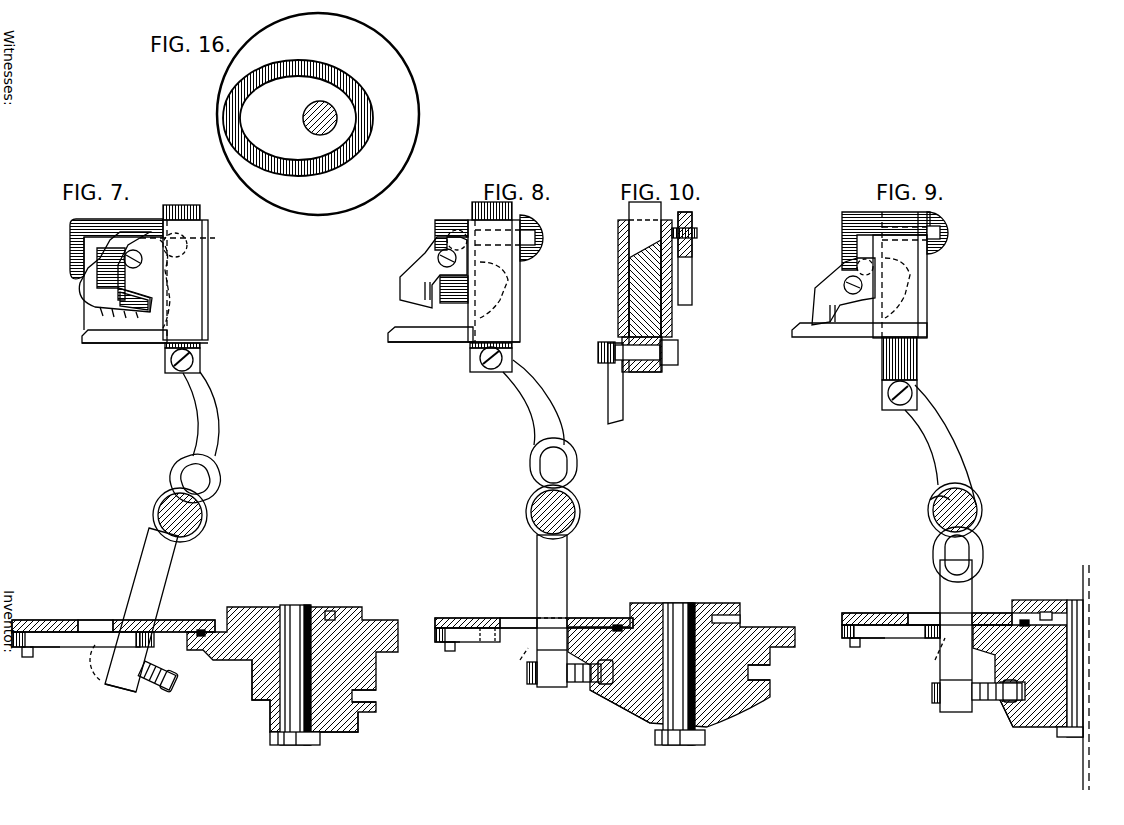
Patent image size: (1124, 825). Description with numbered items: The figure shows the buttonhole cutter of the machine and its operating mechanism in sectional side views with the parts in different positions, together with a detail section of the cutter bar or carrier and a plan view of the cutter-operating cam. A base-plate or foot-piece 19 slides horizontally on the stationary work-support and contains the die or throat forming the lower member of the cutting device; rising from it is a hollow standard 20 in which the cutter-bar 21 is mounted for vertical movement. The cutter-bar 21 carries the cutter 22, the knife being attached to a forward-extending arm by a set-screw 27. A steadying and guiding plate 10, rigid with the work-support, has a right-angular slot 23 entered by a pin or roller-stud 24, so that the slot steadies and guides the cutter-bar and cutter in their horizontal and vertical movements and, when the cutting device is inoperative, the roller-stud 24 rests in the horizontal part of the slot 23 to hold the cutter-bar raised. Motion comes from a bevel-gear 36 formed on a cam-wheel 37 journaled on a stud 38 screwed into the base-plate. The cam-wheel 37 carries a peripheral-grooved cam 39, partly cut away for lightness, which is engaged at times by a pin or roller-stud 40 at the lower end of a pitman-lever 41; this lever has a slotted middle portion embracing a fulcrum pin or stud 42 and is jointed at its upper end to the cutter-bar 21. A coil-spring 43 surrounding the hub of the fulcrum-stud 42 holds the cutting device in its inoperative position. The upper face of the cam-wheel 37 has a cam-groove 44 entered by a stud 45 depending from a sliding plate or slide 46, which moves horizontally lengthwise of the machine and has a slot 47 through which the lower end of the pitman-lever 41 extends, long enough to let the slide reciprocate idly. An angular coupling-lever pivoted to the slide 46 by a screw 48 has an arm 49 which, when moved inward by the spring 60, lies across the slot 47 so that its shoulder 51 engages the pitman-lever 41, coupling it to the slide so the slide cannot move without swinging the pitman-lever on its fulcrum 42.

In FIG. 7, the steadying and guiding plate 10 is at (70, 246).
In FIG. 8, the steadying and guiding plate 10 is at (440, 220).
In FIG. 10, the steadying and guiding plate 10 is at (692, 290).
In FIG. 9, the steadying and guiding plate 10 is at (845, 235).
In FIG. 7, the base-plate or foot-piece 19 is at (82, 336).
In FIG. 8, the base-plate or foot-piece 19 is at (388, 336).
In FIG. 9, the base-plate or foot-piece 19 is at (792, 331).
In FIG. 7, the hollow standard 20 is at (192, 270).
In FIG. 8, the hollow standard 20 is at (505, 272).
In FIG. 10, the hollow standard 20 is at (618, 285).
In FIG. 9, the hollow standard 20 is at (905, 268).
In FIG. 7, the cutter-bar 21 is at (182, 205).
In FIG. 8, the cutter-bar 21 is at (512, 210).
In FIG. 10, the cutter-bar 21 is at (661, 205).
In FIG. 9, the cutter-bar 21 is at (912, 358).
In FIG. 7, the cutter 22 is at (80, 286).
In FIG. 8, the cutter 22 is at (410, 285).
In FIG. 9, the cutter 22 is at (815, 290).
In FIG. 7, the right-angular slot 23 is at (97, 268).
In FIG. 8, the right-angular slot 23 is at (540, 256).
In FIG. 9, the right-angular slot 23 is at (945, 248).
In FIG. 7, the pin or roller-stud 24 is at (205, 238).
In FIG. 8, the pin or roller-stud 24 is at (446, 240).
In FIG. 10, the pin or roller-stud 24 is at (697, 233).
In FIG. 9, the pin or roller-stud 24 is at (840, 264).
In FIG. 7, the set-screw 27 is at (140, 266).
In FIG. 8, the set-screw 27 is at (438, 258).
In FIG. 9, the set-screw 27 is at (860, 290).
In FIG. 16, the bevel-gear 36 is at (318, 114).
In FIG. 7, the bevel-gear 36 is at (203, 658).
In FIG. 8, the bevel-gear 36 is at (790, 655).
In FIG. 9, the bevel-gear 36 is at (1020, 676).
In FIG. 7, the cam-wheel 37 is at (262, 706).
In FIG. 8, the cam-wheel 37 is at (640, 712).
In FIG. 9, the cam-wheel 37 is at (1008, 725).
In FIG. 16, the stud 38 is at (305, 115).
In FIG. 7, the stud 38 is at (290, 720).
In FIG. 8, the stud 38 is at (674, 722).
In FIG. 9, the stud 38 is at (1075, 740).
In FIG. 7, the peripheral-grooved cam 39 is at (366, 696).
In FIG. 8, the peripheral-grooved cam 39 is at (762, 672).
In FIG. 9, the peripheral-grooved cam 39 is at (1018, 700).
In FIG. 7, the pin or roller-stud 40 is at (152, 690).
In FIG. 8, the pin or roller-stud 40 is at (580, 682).
In FIG. 9, the pin or roller-stud 40 is at (985, 702).
In FIG. 7, the pitman-lever 41 is at (150, 570).
In FIG. 8, the pitman-lever 41 is at (546, 568).
In FIG. 10, the pitman-lever 41 is at (623, 400).
In FIG. 9, the pitman-lever 41 is at (942, 582).
In FIG. 7, the fulcrum pin or stud 42 is at (153, 518).
In FIG. 8, the fulcrum pin or stud 42 is at (527, 519).
In FIG. 9, the fulcrum pin or stud 42 is at (928, 525).
In FIG. 7, the coil-spring 43 is at (170, 474).
In FIG. 8, the coil-spring 43 is at (532, 480).
In FIG. 9, the coil-spring 43 is at (932, 505).
In FIG. 16, the cam-groove 44 is at (288, 170).
In FIG. 7, the cam-groove 44 is at (330, 611).
In FIG. 8, the cam-groove 44 is at (750, 628).
In FIG. 9, the cam-groove 44 is at (1046, 616).
In FIG. 7, the stud 45 is at (201, 630).
In FIG. 8, the stud 45 is at (616, 624).
In FIG. 9, the stud 45 is at (1022, 600).
In FIG. 7, the sliding plate or slide 46 is at (42, 620).
In FIG. 8, the sliding plate or slide 46 is at (472, 618).
In FIG. 9, the sliding plate or slide 46 is at (862, 613).
In FIG. 7, the slot 47 is at (100, 620).
In FIG. 8, the slot 47 is at (518, 618).
In FIG. 9, the slot 47 is at (928, 613).
In FIG. 7, the screw 48 is at (26, 657).
In FIG. 8, the screw 48 is at (450, 651).
In FIG. 9, the screw 48 is at (855, 647).
In FIG. 7, the arm 49 is at (84, 647).
In FIG. 8, the arm 49 is at (505, 642).
In FIG. 9, the arm 49 is at (905, 638).
In FIG. 7, the shoulder 51 is at (102, 680).
In FIG. 8, the shoulder 51 is at (524, 664).
In FIG. 9, the shoulder 51 is at (936, 660).
In FIG. 7, the spring 60 is at (40, 650).
In FIG. 8, the spring 60 is at (440, 645).
In FIG. 9, the spring 60 is at (876, 642).